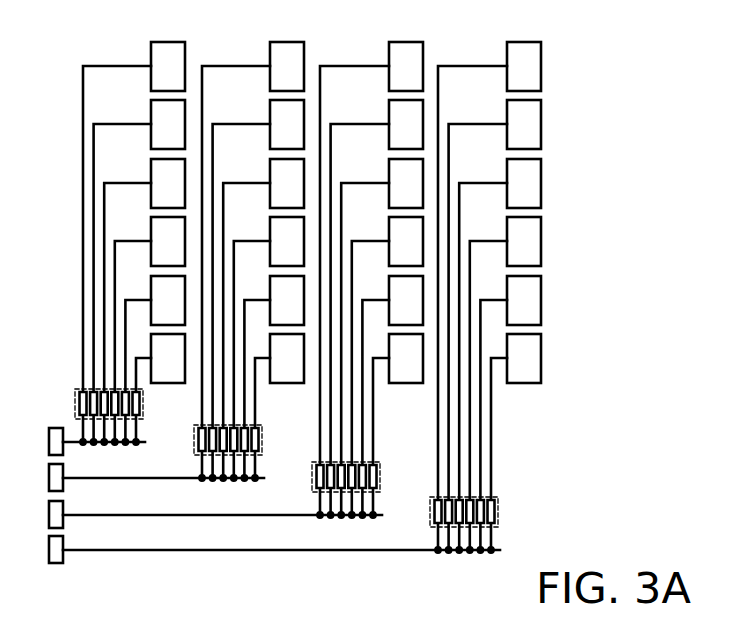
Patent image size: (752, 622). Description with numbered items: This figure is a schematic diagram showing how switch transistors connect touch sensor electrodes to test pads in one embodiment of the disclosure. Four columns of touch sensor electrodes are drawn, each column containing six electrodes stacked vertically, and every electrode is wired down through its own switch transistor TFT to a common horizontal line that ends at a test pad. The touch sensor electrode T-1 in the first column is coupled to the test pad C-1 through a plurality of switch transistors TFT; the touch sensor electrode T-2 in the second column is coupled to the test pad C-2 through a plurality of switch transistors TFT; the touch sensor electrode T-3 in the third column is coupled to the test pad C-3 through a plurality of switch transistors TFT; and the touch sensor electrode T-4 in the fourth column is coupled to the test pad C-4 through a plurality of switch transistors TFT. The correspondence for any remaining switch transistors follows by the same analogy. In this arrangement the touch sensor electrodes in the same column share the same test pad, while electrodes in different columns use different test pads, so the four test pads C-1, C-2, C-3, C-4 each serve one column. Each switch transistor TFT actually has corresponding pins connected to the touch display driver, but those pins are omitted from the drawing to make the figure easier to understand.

The touch sensor electrode in the first column T-1 is at (134, 228).
The touch sensor electrode in the second column T-2 is at (253, 246).
The touch sensor electrode in the third column T-3 is at (371, 265).
The touch sensor electrode in the fourth column T-4 is at (489, 282).
The test pad C-1 is at (76, 442).
The test pad C-2 is at (135, 478).
The test pad C-3 is at (194, 515).
The test pad C-4 is at (253, 550).
The switch transistor TFT is at (75, 405).